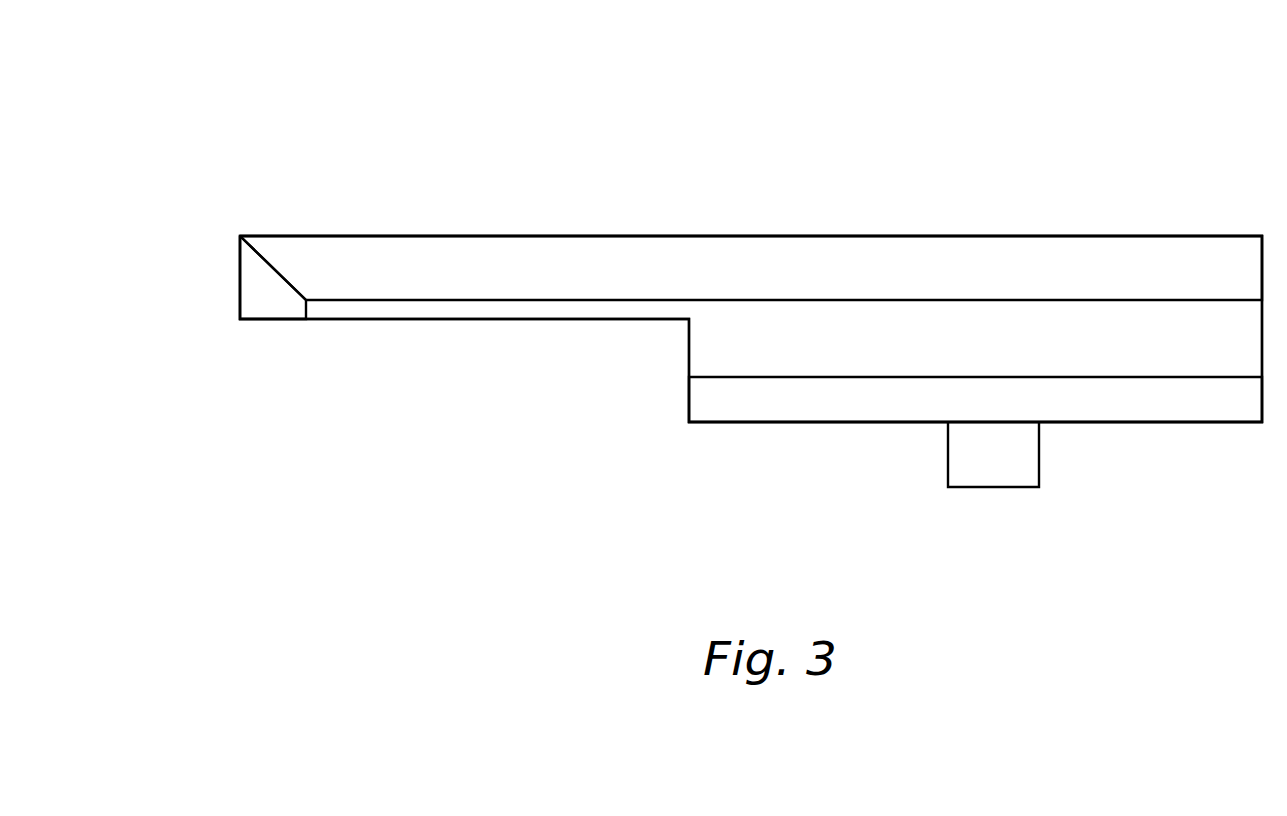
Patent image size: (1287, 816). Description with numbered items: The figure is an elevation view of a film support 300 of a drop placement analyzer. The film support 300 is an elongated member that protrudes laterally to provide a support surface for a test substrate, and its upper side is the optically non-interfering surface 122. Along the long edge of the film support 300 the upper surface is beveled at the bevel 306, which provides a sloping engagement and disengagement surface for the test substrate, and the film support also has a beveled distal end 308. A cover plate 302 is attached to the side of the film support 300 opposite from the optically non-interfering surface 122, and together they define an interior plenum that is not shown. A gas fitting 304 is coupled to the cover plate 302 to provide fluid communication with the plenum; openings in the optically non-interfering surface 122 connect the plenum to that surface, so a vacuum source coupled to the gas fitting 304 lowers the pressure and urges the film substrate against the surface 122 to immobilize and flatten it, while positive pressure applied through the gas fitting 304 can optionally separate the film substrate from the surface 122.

The film support 300 is at (342, 78).
The optically non-interfering surface 122 is at (1000, 212).
The bevel of the long edge 306 is at (815, 258).
The beveled distal end 308 is at (268, 321).
The cover plate 302 is at (782, 424).
The gas fitting 304 is at (993, 488).